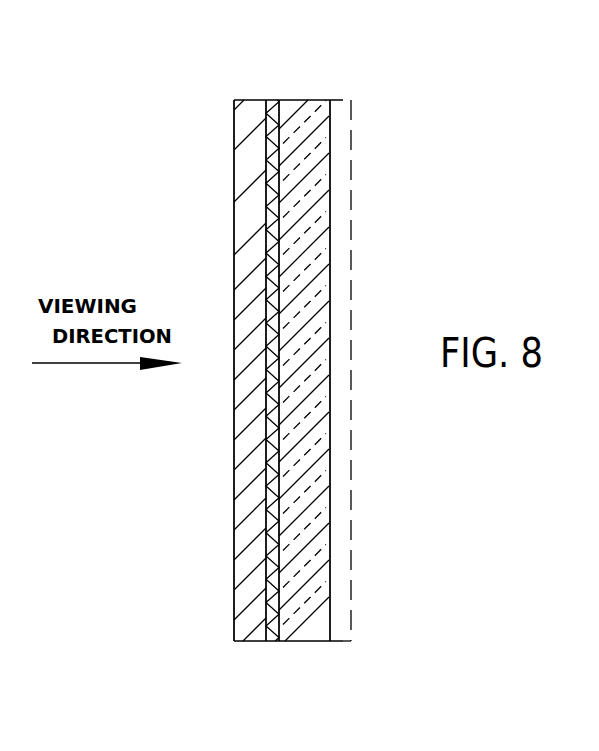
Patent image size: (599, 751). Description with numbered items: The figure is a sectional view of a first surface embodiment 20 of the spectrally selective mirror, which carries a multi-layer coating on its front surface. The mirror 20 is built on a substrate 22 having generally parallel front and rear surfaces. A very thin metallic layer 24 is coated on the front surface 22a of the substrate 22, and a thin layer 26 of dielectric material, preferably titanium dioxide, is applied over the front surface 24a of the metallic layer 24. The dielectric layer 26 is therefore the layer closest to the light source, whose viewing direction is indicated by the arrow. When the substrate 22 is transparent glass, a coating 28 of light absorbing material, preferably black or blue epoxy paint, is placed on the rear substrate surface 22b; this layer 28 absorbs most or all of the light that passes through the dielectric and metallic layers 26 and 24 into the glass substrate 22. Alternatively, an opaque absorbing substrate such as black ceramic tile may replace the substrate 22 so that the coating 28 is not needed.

The first surface embodiment of the spectrally selective mirror 20 is at (348, 60).
The substrate 22 is at (330, 183).
The front surface of the substrate 22a is at (268, 176).
The rear substrate surface 22b is at (330, 340).
The metallic layer 24 is at (273, 310).
The front surface of the metallic layer 24a is at (267, 215).
The dielectric layer 26 is at (243, 121).
The coating of light absorbing material 28 is at (343, 129).